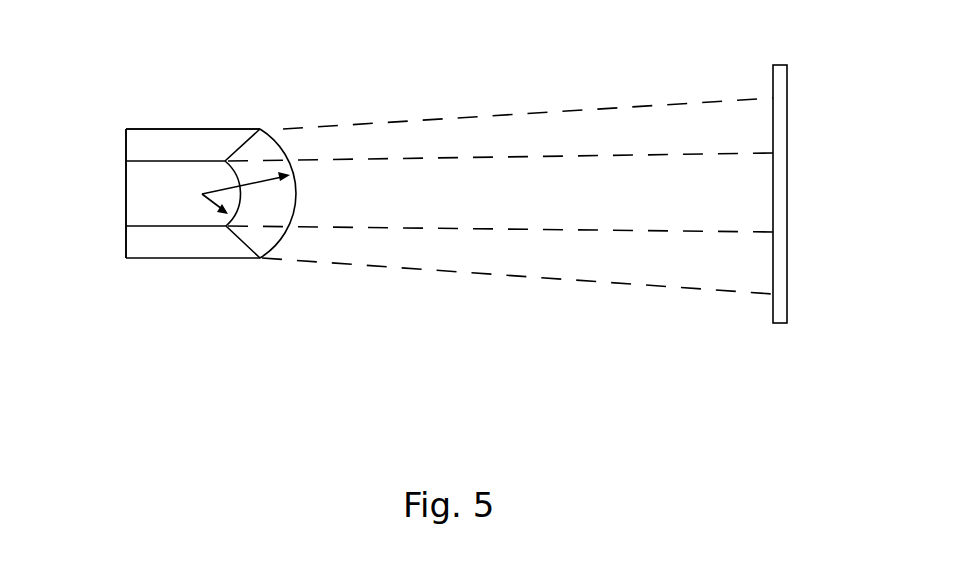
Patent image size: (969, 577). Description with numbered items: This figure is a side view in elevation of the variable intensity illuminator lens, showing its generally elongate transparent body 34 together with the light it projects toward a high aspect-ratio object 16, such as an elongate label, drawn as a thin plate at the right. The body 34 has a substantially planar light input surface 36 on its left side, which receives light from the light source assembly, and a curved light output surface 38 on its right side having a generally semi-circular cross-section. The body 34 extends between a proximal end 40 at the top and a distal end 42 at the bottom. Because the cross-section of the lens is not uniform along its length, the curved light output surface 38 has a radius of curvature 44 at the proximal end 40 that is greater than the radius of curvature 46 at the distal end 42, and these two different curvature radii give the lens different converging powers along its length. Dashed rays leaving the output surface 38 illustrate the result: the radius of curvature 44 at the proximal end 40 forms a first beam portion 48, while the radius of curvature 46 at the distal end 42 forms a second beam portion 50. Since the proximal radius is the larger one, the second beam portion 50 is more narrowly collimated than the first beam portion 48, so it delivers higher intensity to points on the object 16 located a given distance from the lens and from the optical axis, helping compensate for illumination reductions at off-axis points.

The high aspect-ratio object 16 is at (778, 65).
The transparent body 34 is at (183, 129).
The light input surface 36 is at (126, 175).
The light output surface 38 is at (280, 140).
The proximal end 40 is at (147, 128).
The distal end 42 is at (150, 227).
The radius of curvature at the proximal end 44 is at (263, 190).
The radius of curvature at the distal end 46 is at (202, 194).
The first beam portion 48 is at (537, 280).
The second beam portion 50 is at (642, 230).